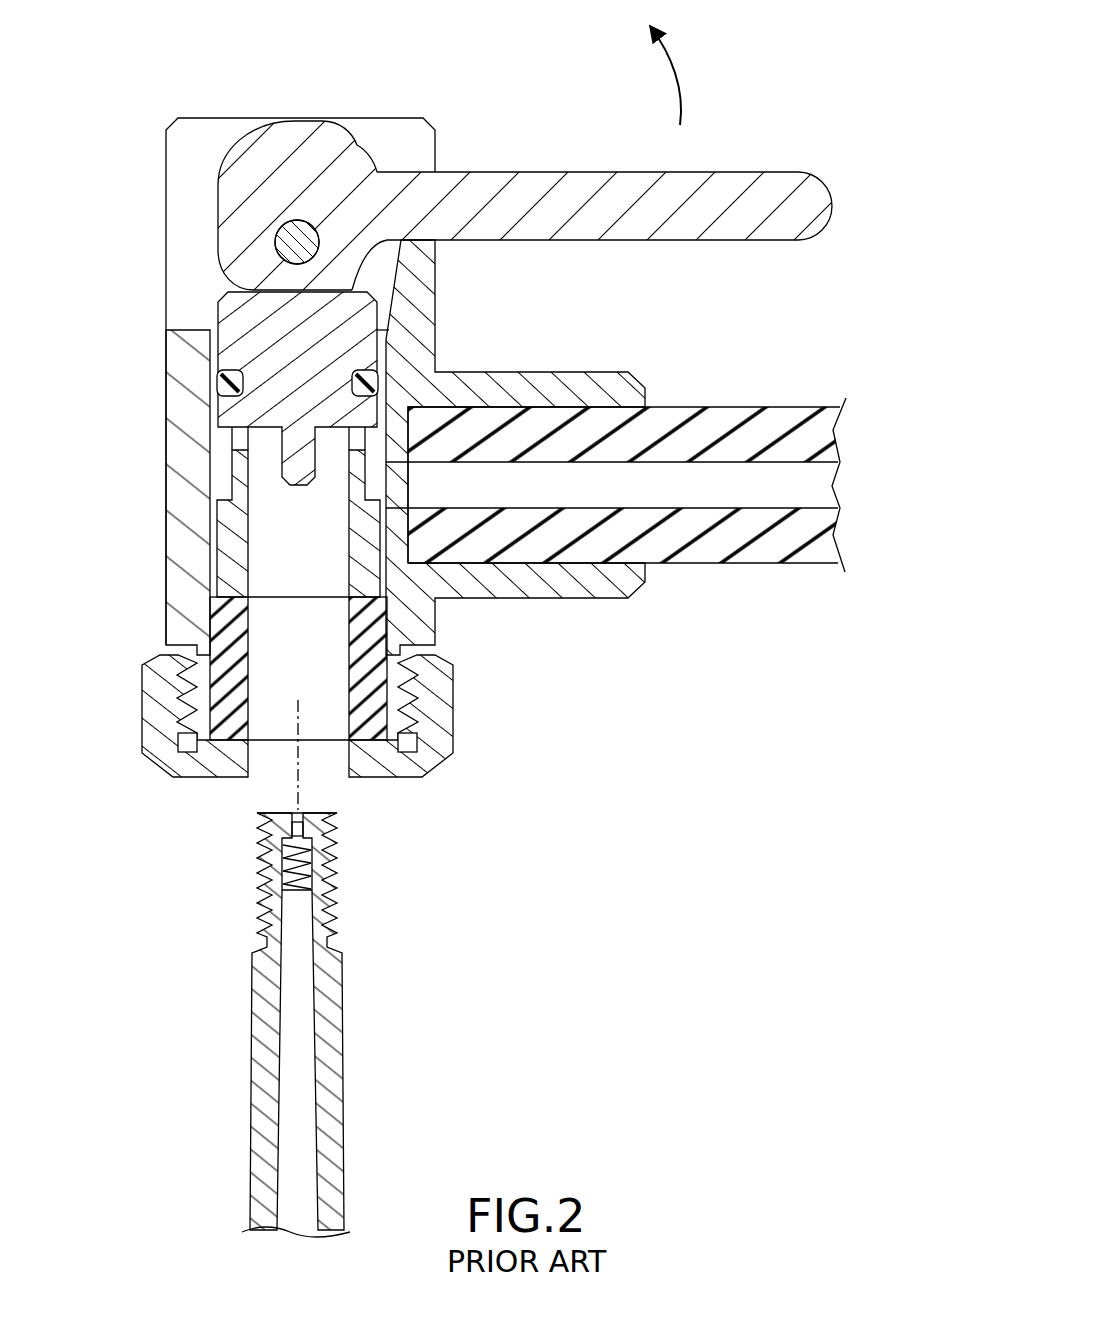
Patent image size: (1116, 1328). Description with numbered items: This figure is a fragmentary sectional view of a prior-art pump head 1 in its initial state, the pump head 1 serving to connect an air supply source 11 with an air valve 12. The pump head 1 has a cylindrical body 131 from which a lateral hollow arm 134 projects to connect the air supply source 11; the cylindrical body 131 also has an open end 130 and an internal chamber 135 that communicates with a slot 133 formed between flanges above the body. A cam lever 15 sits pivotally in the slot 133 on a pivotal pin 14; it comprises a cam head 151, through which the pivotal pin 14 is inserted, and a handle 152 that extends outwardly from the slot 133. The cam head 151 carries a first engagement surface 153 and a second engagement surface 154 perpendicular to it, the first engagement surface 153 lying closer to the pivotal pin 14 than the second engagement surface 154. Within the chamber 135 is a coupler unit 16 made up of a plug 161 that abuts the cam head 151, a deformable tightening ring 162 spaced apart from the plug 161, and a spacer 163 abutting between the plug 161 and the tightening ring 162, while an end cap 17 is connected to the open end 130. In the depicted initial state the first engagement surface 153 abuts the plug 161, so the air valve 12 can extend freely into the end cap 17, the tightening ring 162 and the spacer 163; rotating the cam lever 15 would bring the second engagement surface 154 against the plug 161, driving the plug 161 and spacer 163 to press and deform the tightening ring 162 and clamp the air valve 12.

The pump head 1 is at (362, 360).
The air supply source 11 is at (772, 548).
The air valve 12 is at (341, 1063).
The pivotal pin 14 is at (295, 241).
The cam lever 15 is at (525, 158).
The coupler unit 16 is at (295, 549).
The end cap 17 is at (294, 747).
The open end 130 is at (197, 753).
The cylindrical body 131 is at (176, 385).
The slot 133 is at (133, 216).
The lateral hollow arm 134 is at (583, 585).
The chamber 135 is at (226, 476).
The cam head 151 is at (316, 160).
The handle 152 is at (618, 188).
The first engagement surface 153 is at (330, 288).
The second engagement surface 154 is at (222, 205).
The plug 161 is at (256, 343).
The deformable tightening ring 162 is at (227, 736).
The spacer 163 is at (234, 548).